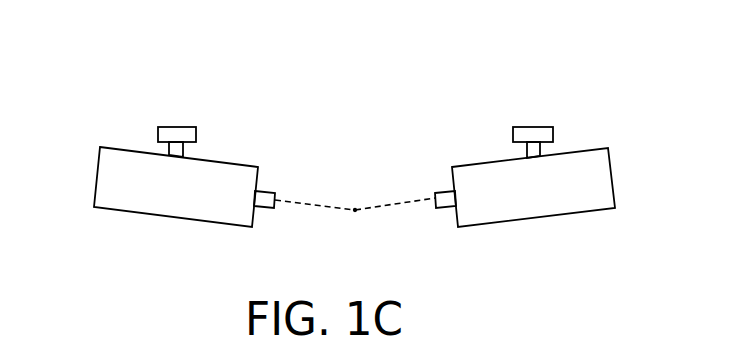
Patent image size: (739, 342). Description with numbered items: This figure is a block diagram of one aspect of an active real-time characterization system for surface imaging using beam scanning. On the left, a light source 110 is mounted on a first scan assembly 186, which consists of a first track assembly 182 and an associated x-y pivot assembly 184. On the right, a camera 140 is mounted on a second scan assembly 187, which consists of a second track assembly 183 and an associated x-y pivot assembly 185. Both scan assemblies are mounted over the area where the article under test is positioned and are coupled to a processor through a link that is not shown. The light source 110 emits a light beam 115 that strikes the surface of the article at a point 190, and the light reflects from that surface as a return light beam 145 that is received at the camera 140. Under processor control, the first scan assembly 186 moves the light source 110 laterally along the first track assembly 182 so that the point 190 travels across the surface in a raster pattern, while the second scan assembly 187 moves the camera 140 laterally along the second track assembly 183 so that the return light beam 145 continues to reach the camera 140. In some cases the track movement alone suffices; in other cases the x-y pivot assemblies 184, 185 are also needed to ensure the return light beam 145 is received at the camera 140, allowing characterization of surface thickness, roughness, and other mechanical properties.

The light source 110 is at (158, 196).
The light beam 115 is at (310, 205).
The camera 140 is at (550, 198).
The return light beam 145 is at (402, 207).
The first track assembly 182 is at (185, 125).
The second track assembly 183 is at (538, 127).
The x-y pivot assembly 184 is at (185, 147).
The x-y pivot assembly 185 is at (517, 150).
The first scan assembly 186 is at (145, 103).
The second scan assembly 187 is at (492, 93).
The point 190 is at (355, 212).